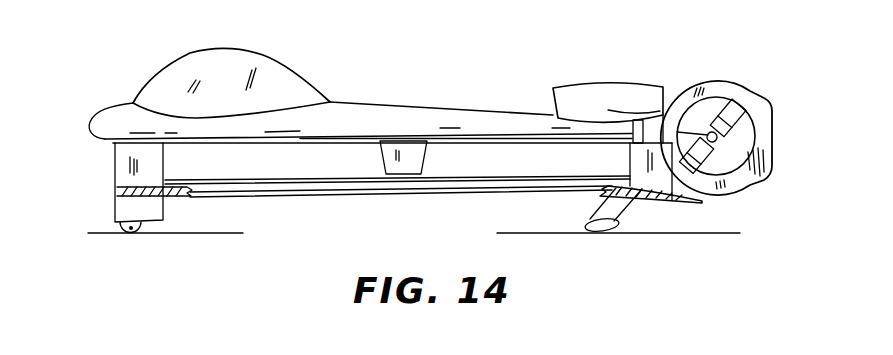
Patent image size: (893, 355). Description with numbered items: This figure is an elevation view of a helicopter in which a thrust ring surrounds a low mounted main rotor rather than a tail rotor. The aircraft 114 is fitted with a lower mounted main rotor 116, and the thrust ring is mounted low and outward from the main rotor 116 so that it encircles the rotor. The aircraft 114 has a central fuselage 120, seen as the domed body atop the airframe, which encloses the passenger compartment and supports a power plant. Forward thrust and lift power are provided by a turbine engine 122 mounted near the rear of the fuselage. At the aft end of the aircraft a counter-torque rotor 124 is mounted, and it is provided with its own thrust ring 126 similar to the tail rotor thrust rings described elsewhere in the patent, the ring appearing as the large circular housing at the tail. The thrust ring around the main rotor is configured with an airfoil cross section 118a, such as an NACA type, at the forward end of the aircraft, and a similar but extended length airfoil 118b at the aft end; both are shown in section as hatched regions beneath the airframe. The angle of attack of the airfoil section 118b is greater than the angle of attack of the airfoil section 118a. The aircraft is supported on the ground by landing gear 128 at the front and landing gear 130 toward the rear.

The aircraft 114 is at (400, 84).
The main rotor 116 is at (343, 179).
The airfoil cross section 118a is at (125, 189).
The extended length airfoil 118b is at (670, 203).
The central fuselage 120 is at (277, 100).
The turbine engine 122 is at (615, 97).
The counter-torque rotor 124 is at (728, 121).
The thrust ring 126 is at (718, 90).
The landing gear 128 is at (128, 233).
The landing gear 130 is at (600, 231).